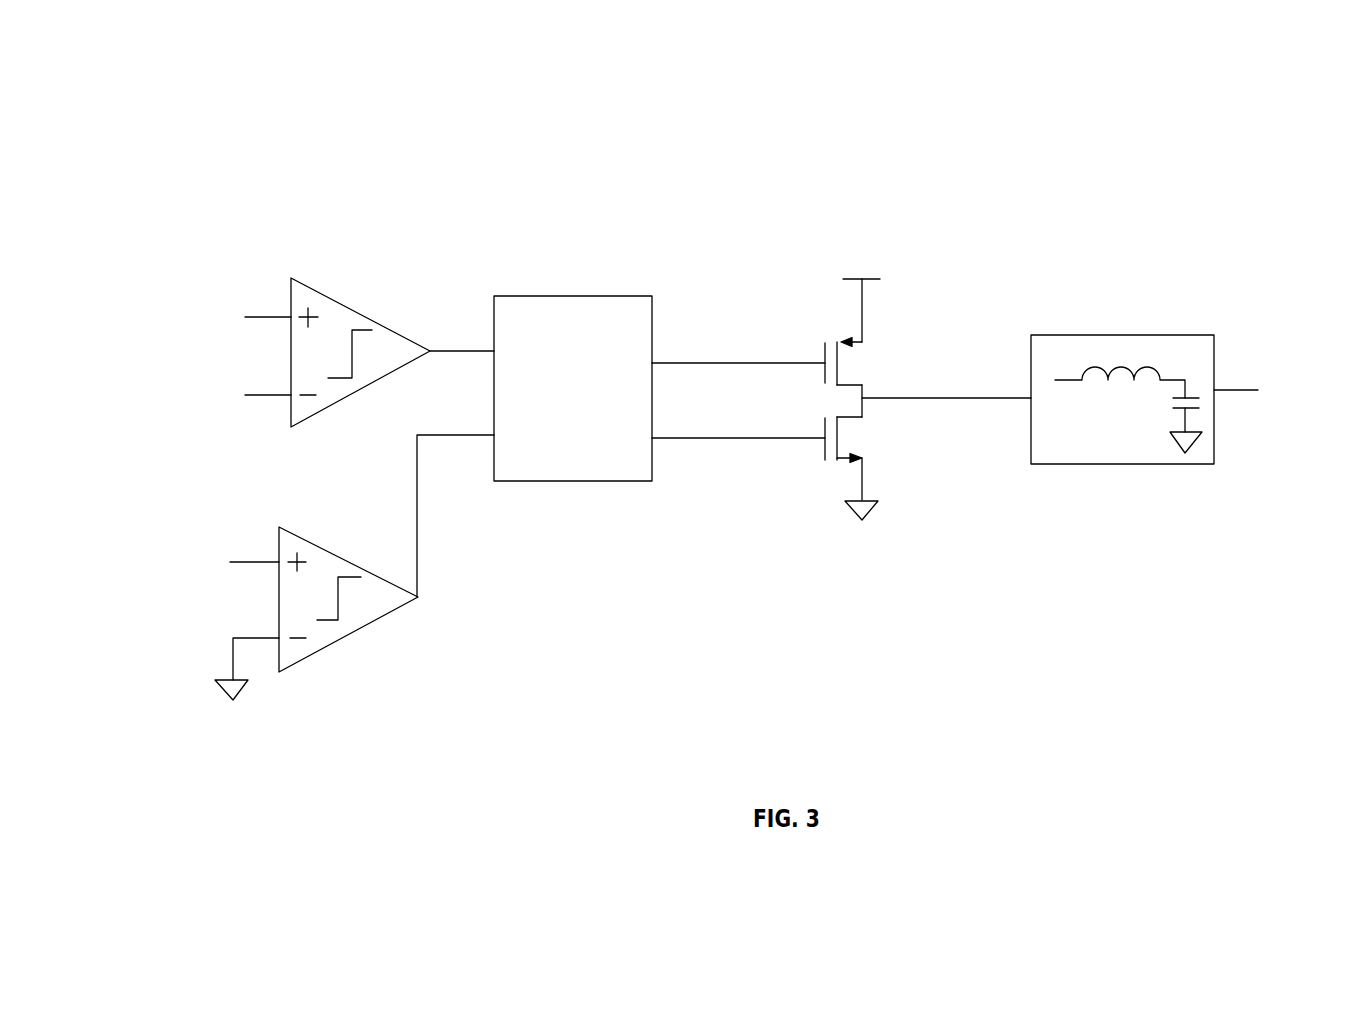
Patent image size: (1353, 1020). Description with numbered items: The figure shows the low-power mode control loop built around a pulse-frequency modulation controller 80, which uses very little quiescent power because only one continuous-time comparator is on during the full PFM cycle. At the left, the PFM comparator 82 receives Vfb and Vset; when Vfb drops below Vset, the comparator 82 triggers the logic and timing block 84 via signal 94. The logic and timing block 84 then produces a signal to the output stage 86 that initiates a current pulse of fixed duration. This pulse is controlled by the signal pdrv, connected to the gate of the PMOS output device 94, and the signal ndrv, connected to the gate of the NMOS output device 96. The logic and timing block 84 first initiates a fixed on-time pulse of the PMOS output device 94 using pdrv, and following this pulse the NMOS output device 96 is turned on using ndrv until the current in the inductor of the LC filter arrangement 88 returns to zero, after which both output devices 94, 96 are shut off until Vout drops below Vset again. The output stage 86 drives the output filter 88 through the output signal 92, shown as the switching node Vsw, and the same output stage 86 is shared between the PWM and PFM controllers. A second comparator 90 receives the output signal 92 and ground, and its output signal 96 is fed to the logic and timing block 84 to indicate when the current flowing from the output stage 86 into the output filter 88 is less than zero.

The pulse-frequency modulation (PFM) controller 80 is at (188, 123).
The PFM comparator 82 is at (420, 335).
The logic and timing block 84 is at (576, 481).
The output stage 86 is at (675, 418).
The LC filter arrangement 88 is at (1152, 464).
The comparator 90 is at (332, 640).
The output signal 92 is at (972, 398).
The PMOS output device 94 is at (471, 345).
The NMOS output device 96 is at (407, 504).